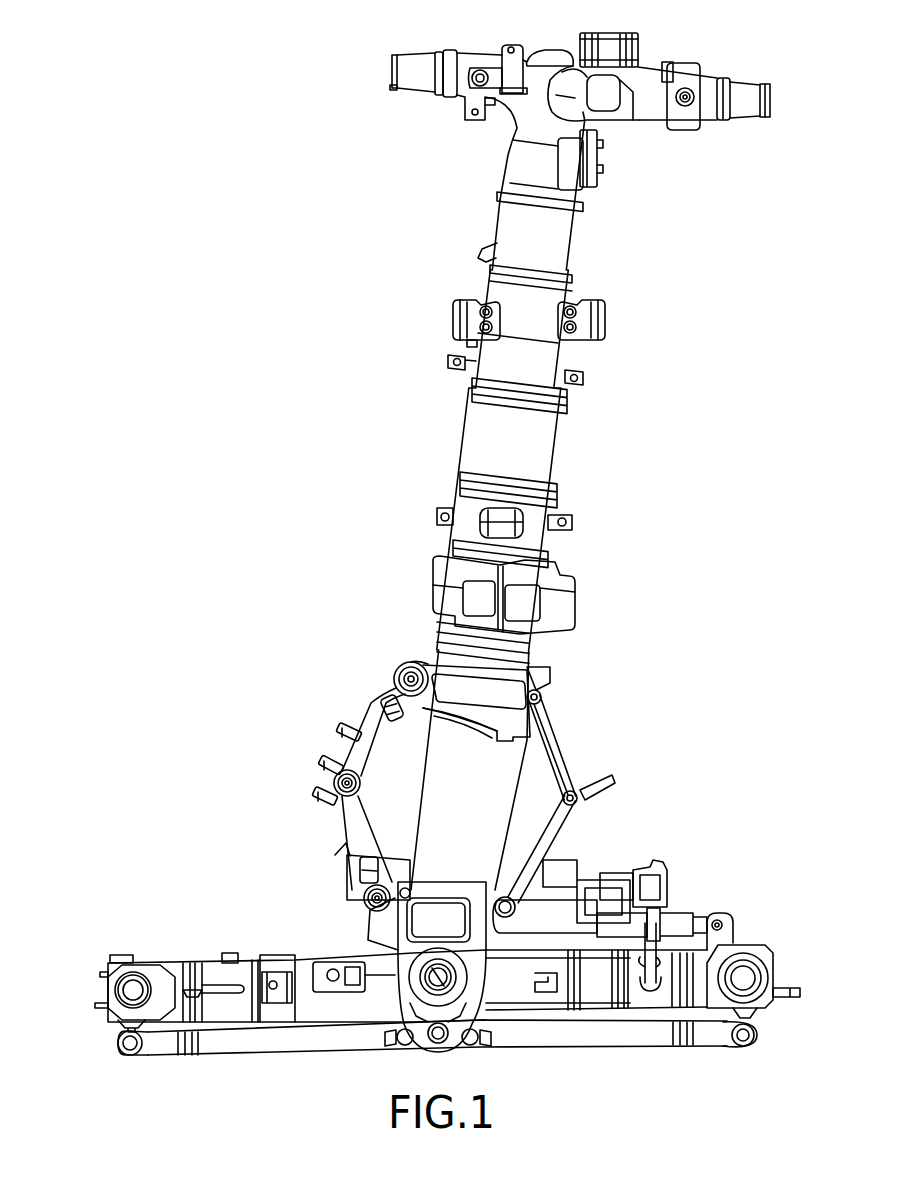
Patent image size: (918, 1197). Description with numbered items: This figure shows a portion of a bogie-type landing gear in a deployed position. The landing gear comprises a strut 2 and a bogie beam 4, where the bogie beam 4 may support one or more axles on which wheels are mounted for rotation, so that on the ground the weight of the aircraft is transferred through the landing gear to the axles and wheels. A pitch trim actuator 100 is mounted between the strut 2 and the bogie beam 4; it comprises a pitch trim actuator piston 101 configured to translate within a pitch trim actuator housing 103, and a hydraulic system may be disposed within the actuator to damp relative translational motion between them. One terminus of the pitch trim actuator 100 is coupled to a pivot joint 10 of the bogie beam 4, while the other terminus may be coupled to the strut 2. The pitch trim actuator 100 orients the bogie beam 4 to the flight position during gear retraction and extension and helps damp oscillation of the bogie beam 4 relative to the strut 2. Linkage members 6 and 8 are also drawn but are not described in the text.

The strut 2 is at (326, 82).
The bogie beam 4 is at (763, 953).
The upper link arm 6 is at (395, 712).
The lower link arm 8 is at (343, 830).
The pivot joint 10 is at (719, 919).
The pitch trim actuator 100 is at (748, 804).
The pitch trim actuator piston 101 is at (683, 913).
The pitch trim actuator housing 103 is at (637, 910).